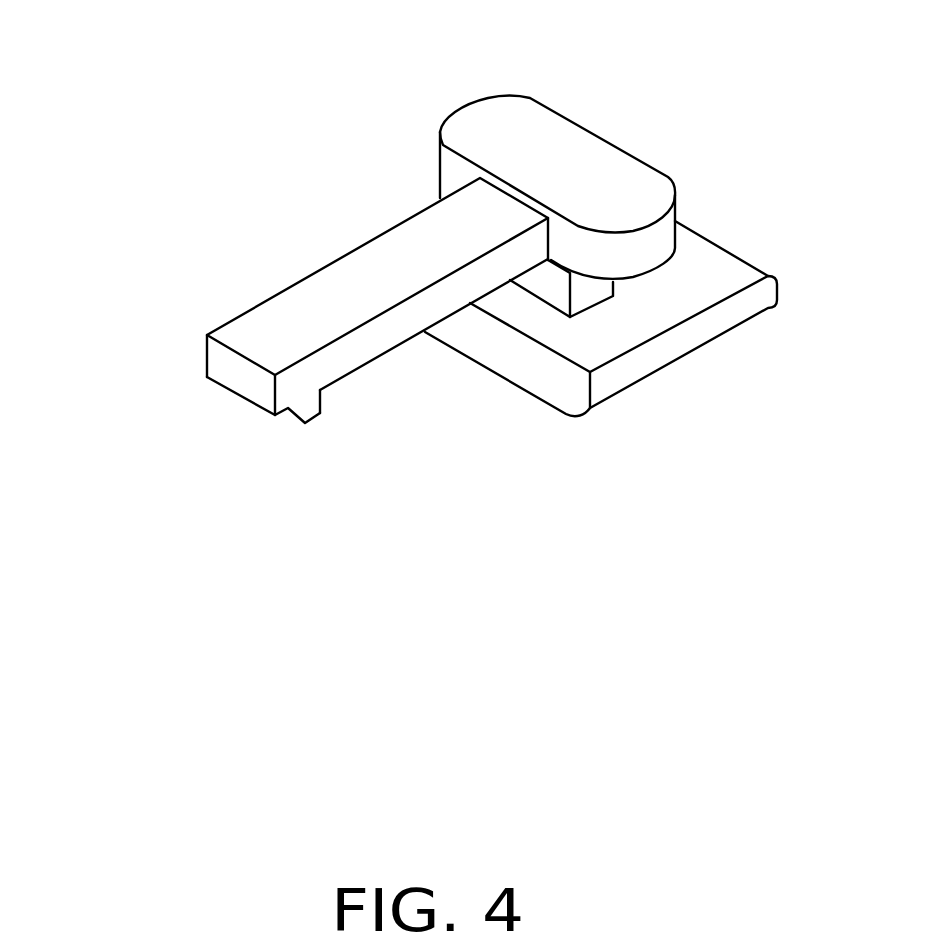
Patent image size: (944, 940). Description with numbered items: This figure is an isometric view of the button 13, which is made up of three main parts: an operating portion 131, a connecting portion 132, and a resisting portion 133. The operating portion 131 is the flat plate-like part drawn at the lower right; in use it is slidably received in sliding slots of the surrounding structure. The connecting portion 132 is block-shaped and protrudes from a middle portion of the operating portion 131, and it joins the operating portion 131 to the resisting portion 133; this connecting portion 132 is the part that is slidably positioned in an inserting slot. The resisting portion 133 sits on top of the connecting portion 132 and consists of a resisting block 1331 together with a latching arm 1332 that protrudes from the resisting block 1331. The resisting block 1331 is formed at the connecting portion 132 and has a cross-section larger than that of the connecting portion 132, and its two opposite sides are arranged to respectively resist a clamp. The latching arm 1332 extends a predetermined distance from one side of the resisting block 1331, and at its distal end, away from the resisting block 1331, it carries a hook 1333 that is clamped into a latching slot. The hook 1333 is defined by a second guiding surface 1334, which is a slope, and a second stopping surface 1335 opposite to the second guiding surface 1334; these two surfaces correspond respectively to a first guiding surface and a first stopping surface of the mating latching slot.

The button 13 is at (350, 58).
The operating portion 131 is at (717, 320).
The connecting portion 132 is at (596, 289).
The resisting portion 133 is at (189, 111).
The resisting block 1331 is at (485, 142).
The latching arm 1332 is at (285, 322).
The hook 1333 is at (438, 514).
The second guiding surface 1334 is at (288, 414).
The second stopping surface 1335 is at (322, 403).